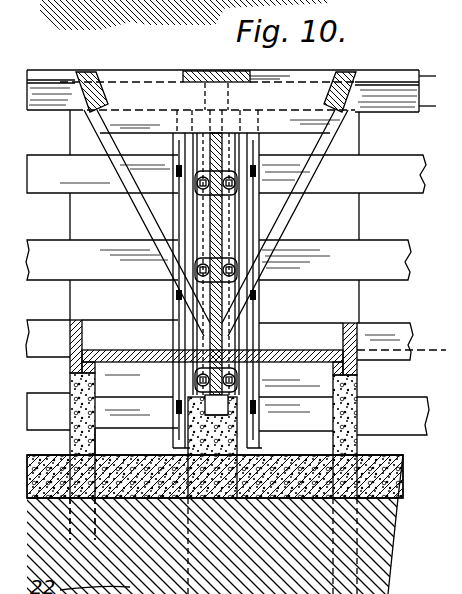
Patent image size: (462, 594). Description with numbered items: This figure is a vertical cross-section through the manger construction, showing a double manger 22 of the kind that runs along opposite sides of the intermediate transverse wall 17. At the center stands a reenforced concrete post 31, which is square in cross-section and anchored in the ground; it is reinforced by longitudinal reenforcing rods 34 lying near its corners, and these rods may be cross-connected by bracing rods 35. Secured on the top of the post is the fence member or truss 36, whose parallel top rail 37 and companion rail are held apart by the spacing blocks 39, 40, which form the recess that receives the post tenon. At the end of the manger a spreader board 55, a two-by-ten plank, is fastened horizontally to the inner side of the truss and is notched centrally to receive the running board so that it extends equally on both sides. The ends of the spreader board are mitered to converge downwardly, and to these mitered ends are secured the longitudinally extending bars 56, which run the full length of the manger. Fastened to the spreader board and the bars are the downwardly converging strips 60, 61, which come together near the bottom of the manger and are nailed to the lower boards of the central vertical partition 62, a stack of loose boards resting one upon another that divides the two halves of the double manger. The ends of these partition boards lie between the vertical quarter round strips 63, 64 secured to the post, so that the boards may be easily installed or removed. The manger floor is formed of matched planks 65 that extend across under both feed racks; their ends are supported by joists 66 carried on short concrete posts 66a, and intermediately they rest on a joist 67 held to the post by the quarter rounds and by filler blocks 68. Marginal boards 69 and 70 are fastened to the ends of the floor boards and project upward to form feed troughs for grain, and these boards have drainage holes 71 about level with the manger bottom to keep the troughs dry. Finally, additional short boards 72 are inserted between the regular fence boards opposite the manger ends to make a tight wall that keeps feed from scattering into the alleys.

The intermediate transverse wall 17 is at (208, 70).
The double manger 22 is at (154, 219).
The reenforced concrete post 31 is at (210, 394).
The reenforcing rods 34 is at (206, 97).
The bracing rods 35 is at (440, 81).
The fence member or truss 36 is at (185, 72).
The top rail 37 is at (440, 111).
The spacing block 39 is at (190, 97).
The spacing block 40 is at (255, 70).
The spreader board 55 is at (314, 127).
The longitudinally extending bar 56 is at (96, 62).
The downwardly converging strip 60 is at (120, 170).
The downwardly converging strip 61 is at (303, 178).
The central vertical partition 62 is at (220, 340).
The vertical quarter round strip 63 is at (198, 232).
The vertical quarter round strip 64 is at (292, 250).
The matched planks 65 is at (106, 361).
The joist 66 is at (96, 398).
The short concrete post 66a is at (395, 432).
The joist 67 is at (176, 432).
The filler block 68 is at (222, 414).
The marginal board 69 is at (70, 338).
The marginal board 70 is at (366, 328).
The drainage hole 71 is at (409, 351).
The additional short board 72 is at (70, 135).